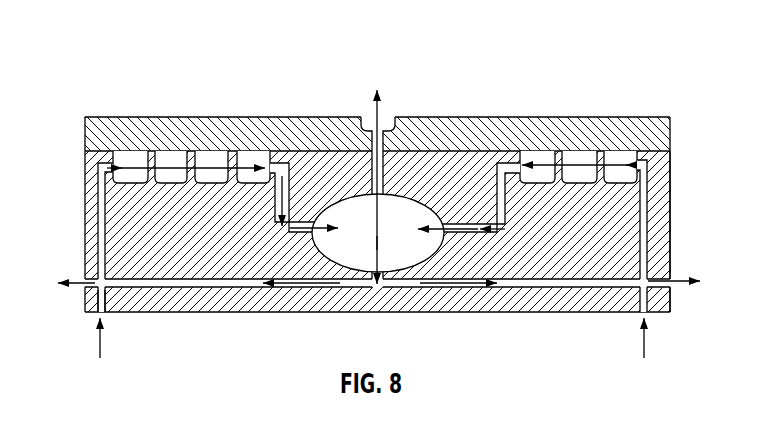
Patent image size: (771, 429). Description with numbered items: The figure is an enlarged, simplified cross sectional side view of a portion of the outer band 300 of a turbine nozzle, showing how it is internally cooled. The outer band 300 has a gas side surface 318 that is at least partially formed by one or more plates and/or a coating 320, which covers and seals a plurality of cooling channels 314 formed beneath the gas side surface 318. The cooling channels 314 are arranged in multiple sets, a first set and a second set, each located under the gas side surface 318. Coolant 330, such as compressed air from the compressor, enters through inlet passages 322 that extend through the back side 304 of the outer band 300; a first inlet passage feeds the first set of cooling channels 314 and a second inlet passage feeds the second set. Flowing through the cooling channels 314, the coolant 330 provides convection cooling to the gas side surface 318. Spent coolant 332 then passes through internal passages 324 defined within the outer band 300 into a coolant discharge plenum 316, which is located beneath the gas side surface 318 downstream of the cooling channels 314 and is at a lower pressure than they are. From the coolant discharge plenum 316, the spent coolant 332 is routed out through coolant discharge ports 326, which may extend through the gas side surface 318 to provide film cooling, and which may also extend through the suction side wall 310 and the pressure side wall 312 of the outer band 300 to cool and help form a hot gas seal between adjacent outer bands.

The outer band 300 is at (533, 33).
The back side 304 is at (367, 317).
The suction side wall 310 is at (85, 200).
The pressure side wall 312 is at (671, 195).
The cooling channels 314 is at (213, 158).
The coolant discharge plenum 316 is at (393, 248).
The gas side surface 318 is at (458, 114).
The coating 320 is at (282, 117).
The inlet passage 322 is at (94, 237).
The internal passage 324 is at (283, 234).
The coolant discharge port 326 is at (392, 115).
The coolant 330 is at (257, 151).
The spent coolant 332 is at (380, 92).